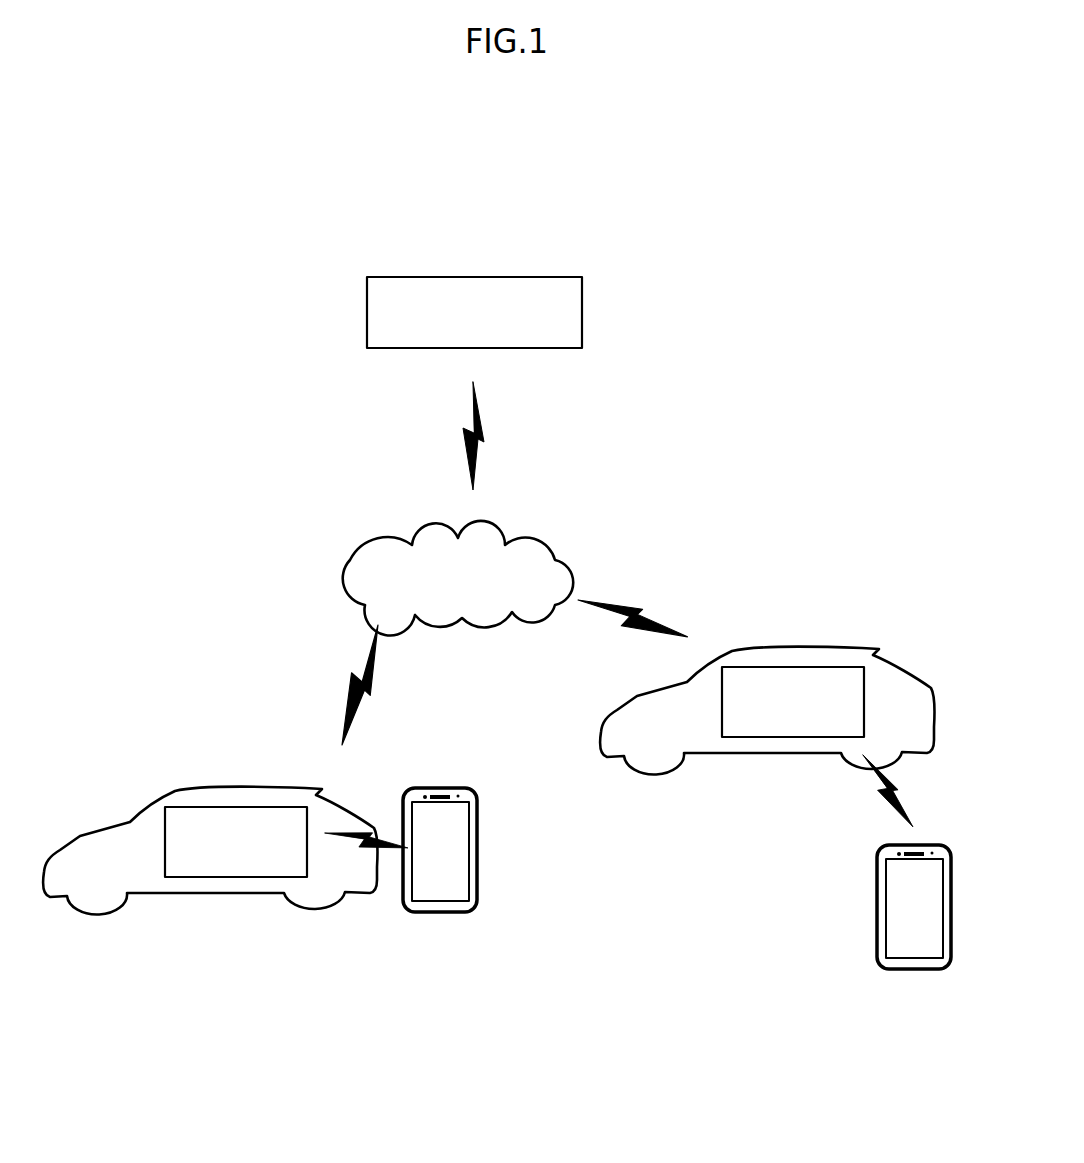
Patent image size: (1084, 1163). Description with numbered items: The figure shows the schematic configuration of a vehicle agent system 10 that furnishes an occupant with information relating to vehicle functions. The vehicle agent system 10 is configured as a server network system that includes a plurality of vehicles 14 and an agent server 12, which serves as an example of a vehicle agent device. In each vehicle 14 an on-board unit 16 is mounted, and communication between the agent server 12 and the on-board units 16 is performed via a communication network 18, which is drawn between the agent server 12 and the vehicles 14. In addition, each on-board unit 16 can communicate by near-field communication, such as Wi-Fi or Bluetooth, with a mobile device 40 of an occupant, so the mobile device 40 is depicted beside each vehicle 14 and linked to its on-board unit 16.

The vehicle agent system 10 is at (701, 221).
The agent server 12 is at (472, 277).
The vehicle 14 is at (222, 788).
The on-board unit 16 is at (239, 877).
The communication network 18 is at (523, 537).
The mobile device 40 is at (450, 897).